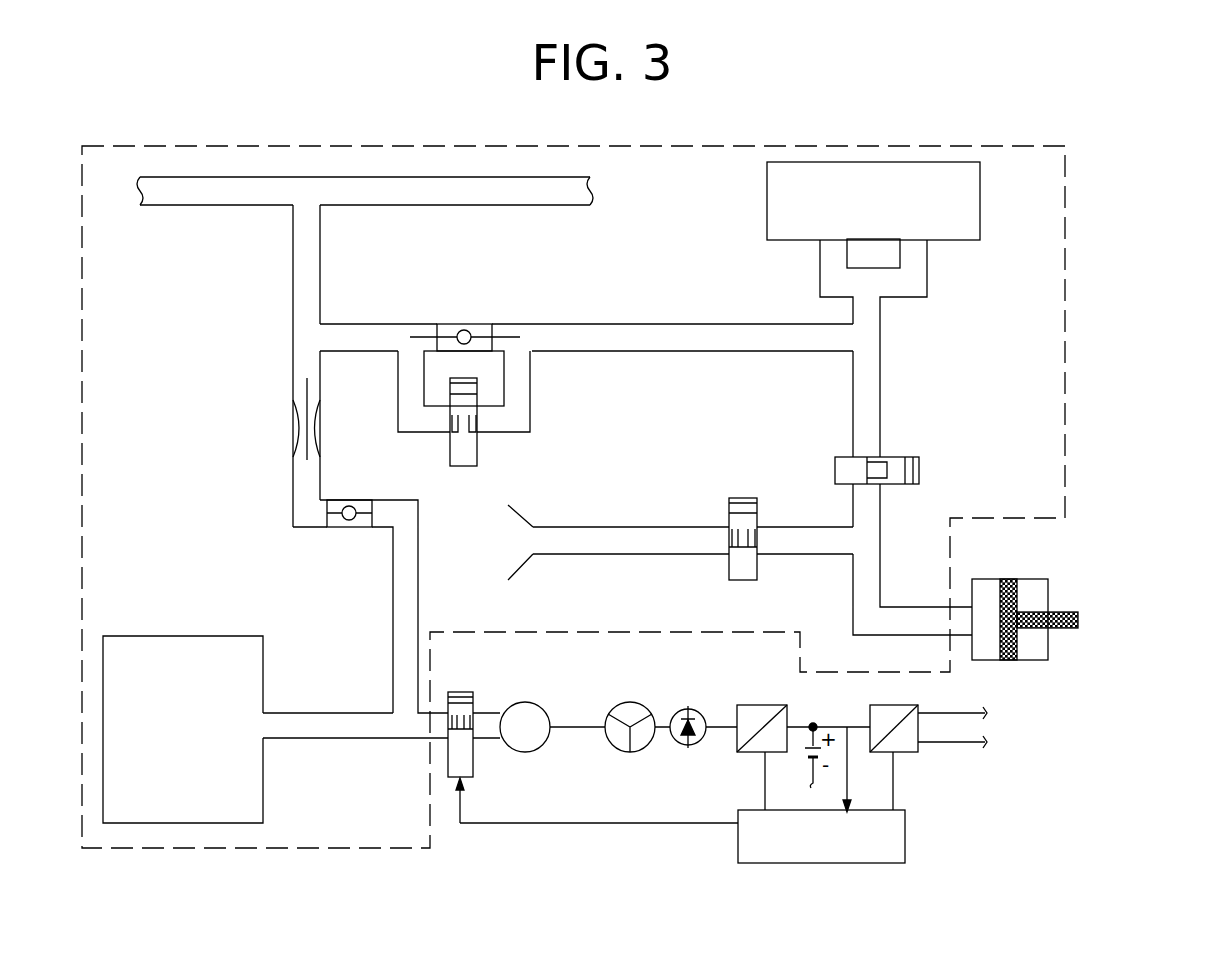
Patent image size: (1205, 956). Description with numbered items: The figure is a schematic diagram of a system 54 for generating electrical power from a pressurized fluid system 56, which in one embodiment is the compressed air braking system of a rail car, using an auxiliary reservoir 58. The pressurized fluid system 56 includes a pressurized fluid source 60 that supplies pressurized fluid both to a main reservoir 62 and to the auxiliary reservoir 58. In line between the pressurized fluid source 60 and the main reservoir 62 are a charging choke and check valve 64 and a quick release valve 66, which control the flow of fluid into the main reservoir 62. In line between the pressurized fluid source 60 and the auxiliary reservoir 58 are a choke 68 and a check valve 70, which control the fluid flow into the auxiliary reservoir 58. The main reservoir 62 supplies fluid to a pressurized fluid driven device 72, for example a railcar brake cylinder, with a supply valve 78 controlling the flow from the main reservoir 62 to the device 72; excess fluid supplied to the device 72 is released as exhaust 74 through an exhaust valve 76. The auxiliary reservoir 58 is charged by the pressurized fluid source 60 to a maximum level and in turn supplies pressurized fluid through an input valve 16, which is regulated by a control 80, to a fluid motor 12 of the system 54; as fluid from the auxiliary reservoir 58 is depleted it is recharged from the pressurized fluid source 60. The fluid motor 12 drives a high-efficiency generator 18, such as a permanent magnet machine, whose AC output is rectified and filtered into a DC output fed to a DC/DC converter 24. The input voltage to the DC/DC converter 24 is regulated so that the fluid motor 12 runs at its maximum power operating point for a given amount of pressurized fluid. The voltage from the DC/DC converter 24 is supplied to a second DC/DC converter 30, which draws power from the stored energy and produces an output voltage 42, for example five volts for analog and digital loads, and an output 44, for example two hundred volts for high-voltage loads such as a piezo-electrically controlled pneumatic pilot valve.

The fluid motor 12 is at (542, 705).
The input valve 16 is at (465, 692).
The generator 18 is at (632, 704).
The DC/DC converter 24 is at (786, 713).
The second DC/DC converter 30 is at (903, 753).
The output voltage 42 is at (970, 745).
The output 44 is at (985, 707).
The system 54 is at (985, 795).
The pressurized fluid system 56 is at (1027, 298).
The auxiliary reservoir 58 is at (263, 777).
The pressurized fluid source 60 is at (197, 207).
The main reservoir 62 is at (767, 192).
The charging choke and check valve 64 is at (478, 322).
The quick release valve 66 is at (479, 452).
The choke 68 is at (293, 428).
The check valve 70 is at (343, 530).
The pressurized fluid driven device 72 is at (1027, 579).
The exhaust 74 is at (590, 527).
The exhaust valve 76 is at (748, 497).
The supply valve 78 is at (897, 456).
The control 80 is at (826, 863).